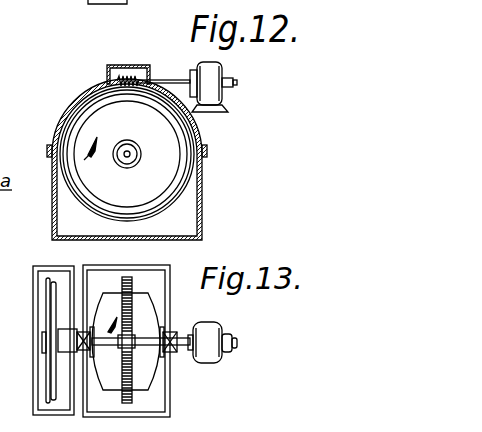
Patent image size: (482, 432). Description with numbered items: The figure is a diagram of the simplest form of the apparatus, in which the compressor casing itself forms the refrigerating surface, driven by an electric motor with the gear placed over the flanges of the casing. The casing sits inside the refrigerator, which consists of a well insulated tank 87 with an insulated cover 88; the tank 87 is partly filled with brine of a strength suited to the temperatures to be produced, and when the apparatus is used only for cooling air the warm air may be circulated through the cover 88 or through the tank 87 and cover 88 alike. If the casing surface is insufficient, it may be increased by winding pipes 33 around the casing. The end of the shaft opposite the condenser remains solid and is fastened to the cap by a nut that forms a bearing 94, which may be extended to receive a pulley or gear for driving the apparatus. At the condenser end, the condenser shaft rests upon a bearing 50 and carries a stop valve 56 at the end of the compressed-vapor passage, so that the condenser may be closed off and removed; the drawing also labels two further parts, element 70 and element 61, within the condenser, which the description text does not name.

In FIG. 12, the tank 87 is at (202, 187).
In FIG. 13, the tank 87 is at (167, 370).
In FIG. 12, the insulated cover 88 is at (197, 138).
In FIG. 13, the bearing 94 is at (172, 337).
In FIG. 13, the casing 70 is at (37, 280).
In FIG. 13, the plate 61 is at (48, 297).
In FIG. 13, the pipes 33 is at (53, 319).
In FIG. 13, the stop valve 56 is at (67, 340).
In FIG. 13, the bearing 50 is at (78, 348).